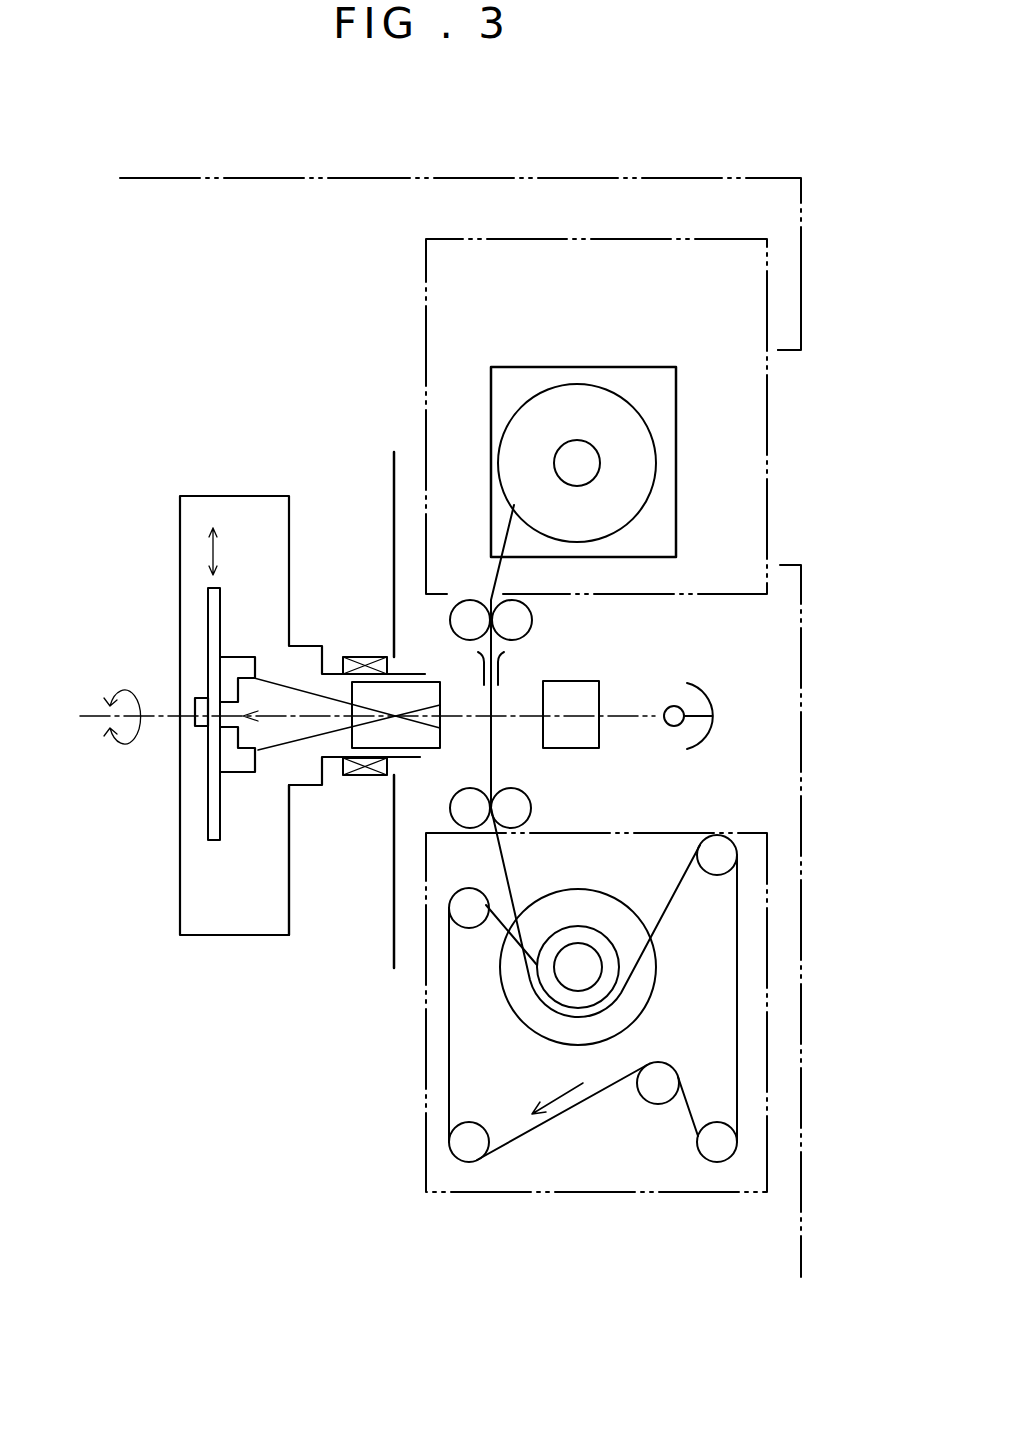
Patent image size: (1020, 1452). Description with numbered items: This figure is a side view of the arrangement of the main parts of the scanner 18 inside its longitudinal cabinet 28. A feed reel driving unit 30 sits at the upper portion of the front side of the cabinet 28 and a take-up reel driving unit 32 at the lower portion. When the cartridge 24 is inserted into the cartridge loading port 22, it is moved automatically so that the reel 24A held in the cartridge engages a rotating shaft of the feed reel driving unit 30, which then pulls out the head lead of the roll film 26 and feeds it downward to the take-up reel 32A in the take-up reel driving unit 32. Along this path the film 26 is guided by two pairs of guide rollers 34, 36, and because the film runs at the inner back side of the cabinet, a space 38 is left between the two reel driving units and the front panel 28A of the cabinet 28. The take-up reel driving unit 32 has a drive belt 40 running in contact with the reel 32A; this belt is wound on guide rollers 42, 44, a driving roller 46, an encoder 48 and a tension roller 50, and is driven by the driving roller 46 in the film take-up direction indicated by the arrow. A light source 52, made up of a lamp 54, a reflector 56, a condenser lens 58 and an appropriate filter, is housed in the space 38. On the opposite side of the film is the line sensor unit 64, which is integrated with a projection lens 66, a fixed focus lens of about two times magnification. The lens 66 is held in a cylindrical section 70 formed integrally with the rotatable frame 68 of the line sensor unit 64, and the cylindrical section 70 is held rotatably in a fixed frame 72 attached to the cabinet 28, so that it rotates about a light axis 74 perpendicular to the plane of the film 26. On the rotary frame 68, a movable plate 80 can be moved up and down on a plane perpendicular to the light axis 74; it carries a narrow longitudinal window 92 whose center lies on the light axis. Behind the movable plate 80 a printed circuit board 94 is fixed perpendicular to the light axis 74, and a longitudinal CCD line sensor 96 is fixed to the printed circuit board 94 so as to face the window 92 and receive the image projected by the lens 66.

The scanner 18 is at (501, 170).
The cartridge loading port 22 is at (785, 450).
The cartridge 24 is at (620, 422).
The reel 24A is at (677, 434).
The roll film 26 is at (503, 850).
The cabinet 28 is at (333, 178).
The front panel 28A is at (801, 582).
The feed reel driving unit 30 is at (768, 250).
The take-up reel driving unit 32 is at (768, 1137).
The take-up reel 32A is at (657, 967).
The guide rollers 34 is at (466, 610).
The guide rollers 36 is at (455, 797).
The space 38 is at (750, 662).
The drive belt 40 is at (609, 1042).
The guide roller 42 is at (455, 915).
The guide roller 44 is at (738, 855).
The driving roller 46 is at (716, 1160).
The encoder 48 is at (650, 1090).
The tension roller 50 is at (470, 1160).
The light source 52 is at (742, 706).
The lamp 54 is at (710, 718).
The reflector 56 is at (689, 748).
The condenser lens 58 is at (598, 750).
The line sensor unit 64 is at (302, 679).
The projection lens 66 is at (425, 682).
The rotatable frame 68 is at (290, 852).
The cylindrical section 70 is at (412, 758).
The fixed frame 72 is at (394, 474).
The light axis 74 is at (610, 716).
The movable plate 80 is at (242, 772).
The window 92 is at (232, 706).
The printed circuit board 94 is at (210, 602).
The CCD line sensor 96 is at (195, 726).